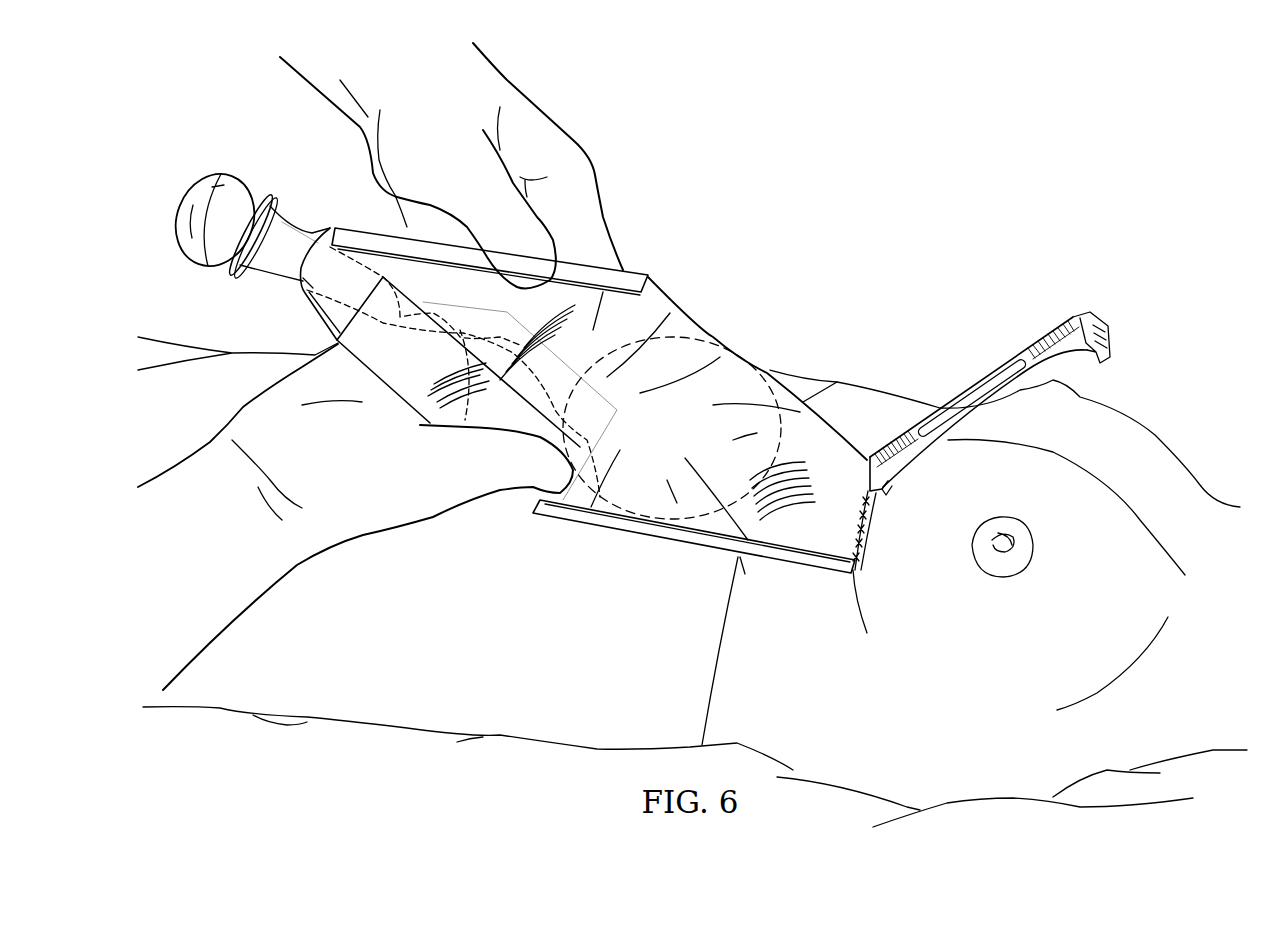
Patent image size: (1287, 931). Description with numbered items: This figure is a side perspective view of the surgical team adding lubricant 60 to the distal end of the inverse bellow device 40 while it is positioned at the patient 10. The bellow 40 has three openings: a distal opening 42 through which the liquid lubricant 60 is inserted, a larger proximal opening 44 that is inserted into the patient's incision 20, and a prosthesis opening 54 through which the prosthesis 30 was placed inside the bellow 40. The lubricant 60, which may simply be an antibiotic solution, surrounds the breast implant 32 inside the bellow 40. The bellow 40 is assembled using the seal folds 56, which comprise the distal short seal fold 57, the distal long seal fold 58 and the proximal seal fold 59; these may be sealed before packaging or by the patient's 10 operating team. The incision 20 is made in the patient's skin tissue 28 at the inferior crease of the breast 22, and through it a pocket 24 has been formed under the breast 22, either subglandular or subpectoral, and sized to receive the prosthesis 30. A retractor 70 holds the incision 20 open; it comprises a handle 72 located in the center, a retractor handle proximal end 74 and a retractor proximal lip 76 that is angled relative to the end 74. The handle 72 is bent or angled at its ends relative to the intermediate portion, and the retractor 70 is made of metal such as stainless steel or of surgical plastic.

The patient 10 is at (1150, 403).
The incision 20 is at (882, 538).
The breast 22 is at (1100, 492).
The pocket 24 is at (870, 513).
The skin tissue 28 is at (1058, 467).
The prosthesis 30 is at (600, 348).
The breast implant 32 is at (740, 362).
The inverse bellow device 40 is at (713, 317).
The distal opening 42 is at (326, 228).
The proximal opening 44 is at (783, 577).
The prosthesis opening 54 is at (403, 408).
The seal folds 56 is at (697, 540).
The distal short seal fold 57 is at (310, 306).
The distal long seal fold 58 is at (366, 236).
The proximal seal fold 59 is at (633, 527).
The lubricant 60 is at (490, 333).
The retractor 70 is at (955, 390).
The handle 72 is at (1023, 360).
The retractor handle proximal end 74 is at (885, 448).
The retractor proximal lip 76 is at (892, 488).